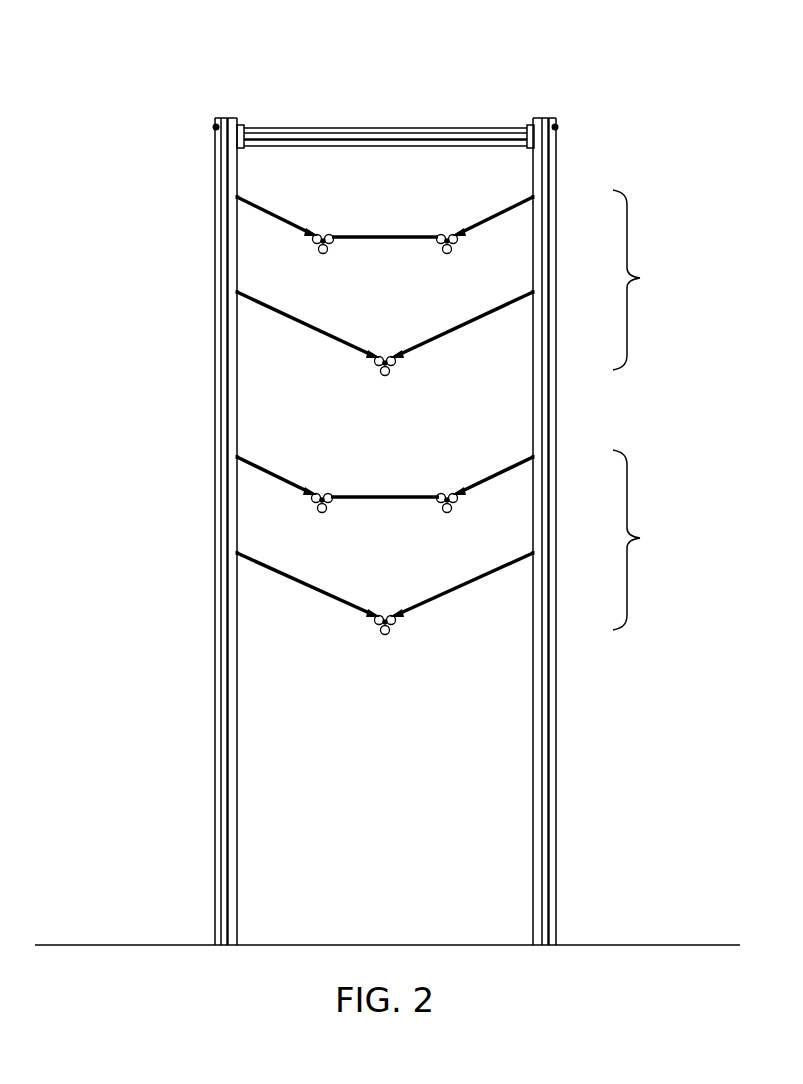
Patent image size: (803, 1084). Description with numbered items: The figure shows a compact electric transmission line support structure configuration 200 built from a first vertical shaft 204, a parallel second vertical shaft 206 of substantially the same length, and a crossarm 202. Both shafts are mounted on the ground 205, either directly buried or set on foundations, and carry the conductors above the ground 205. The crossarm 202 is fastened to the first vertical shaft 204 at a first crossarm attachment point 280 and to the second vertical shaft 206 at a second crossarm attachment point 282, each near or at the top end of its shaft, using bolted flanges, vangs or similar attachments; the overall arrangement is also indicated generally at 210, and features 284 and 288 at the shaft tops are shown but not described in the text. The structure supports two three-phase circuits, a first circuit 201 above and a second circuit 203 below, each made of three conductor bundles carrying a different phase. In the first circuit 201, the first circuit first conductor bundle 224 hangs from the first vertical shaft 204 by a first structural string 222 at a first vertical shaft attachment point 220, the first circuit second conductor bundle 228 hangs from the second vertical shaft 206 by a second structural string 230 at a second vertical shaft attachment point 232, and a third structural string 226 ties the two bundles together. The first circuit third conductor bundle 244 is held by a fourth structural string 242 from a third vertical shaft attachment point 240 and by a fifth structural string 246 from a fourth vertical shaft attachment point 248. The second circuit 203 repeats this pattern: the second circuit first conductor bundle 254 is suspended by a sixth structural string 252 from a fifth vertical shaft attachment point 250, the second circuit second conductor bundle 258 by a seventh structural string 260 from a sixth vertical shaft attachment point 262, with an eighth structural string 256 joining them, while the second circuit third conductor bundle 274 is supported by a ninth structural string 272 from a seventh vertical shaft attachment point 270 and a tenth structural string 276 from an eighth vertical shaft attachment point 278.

The compact electric transmission line support structure configuration 200 is at (98, 86).
The first circuit 201 is at (651, 280).
The crossarm 202 is at (390, 128).
The second circuit 203 is at (651, 540).
The first vertical shaft 204 is at (214, 815).
The ground 205 is at (390, 945).
The second vertical shaft 206 is at (556, 815).
The cable system 210 is at (195, 220).
The first vertical shaft attachment point 220 is at (232, 196).
The first structural string 222 is at (280, 218).
The first circuit first conductor bundle 224 is at (326, 234).
The third structural string 226 is at (388, 240).
The first circuit second conductor bundle 228 is at (448, 234).
The second structural string 230 is at (492, 216).
The second vertical shaft attachment point 232 is at (535, 196).
The third vertical shaft attachment point 240 is at (232, 292).
The fourth structural string 242 is at (310, 326).
The first circuit third conductor bundle 244 is at (388, 357).
The fifth structural string 246 is at (462, 326).
The fourth vertical shaft attachment point 248 is at (536, 292).
The fifth vertical shaft attachment point 250 is at (232, 457).
The sixth structural string 252 is at (282, 479).
The second circuit first conductor bundle 254 is at (327, 493).
The eighth structural string 256 is at (388, 500).
The second circuit second conductor bundle 258 is at (448, 493).
The seventh structural string 260 is at (488, 477).
The sixth vertical shaft attachment point 262 is at (535, 456).
The seventh vertical shaft attachment point 270 is at (232, 553).
The ninth structural string 272 is at (316, 590).
The second circuit third conductor bundle 274 is at (388, 616).
The tenth structural string 276 is at (458, 588).
The eighth vertical shaft attachment point 278 is at (536, 552).
The first crossarm attachment point 280 is at (226, 118).
The second crossarm attachment point 282 is at (548, 118).
The left post cap 284 is at (213, 127).
The right post cap 288 is at (558, 127).